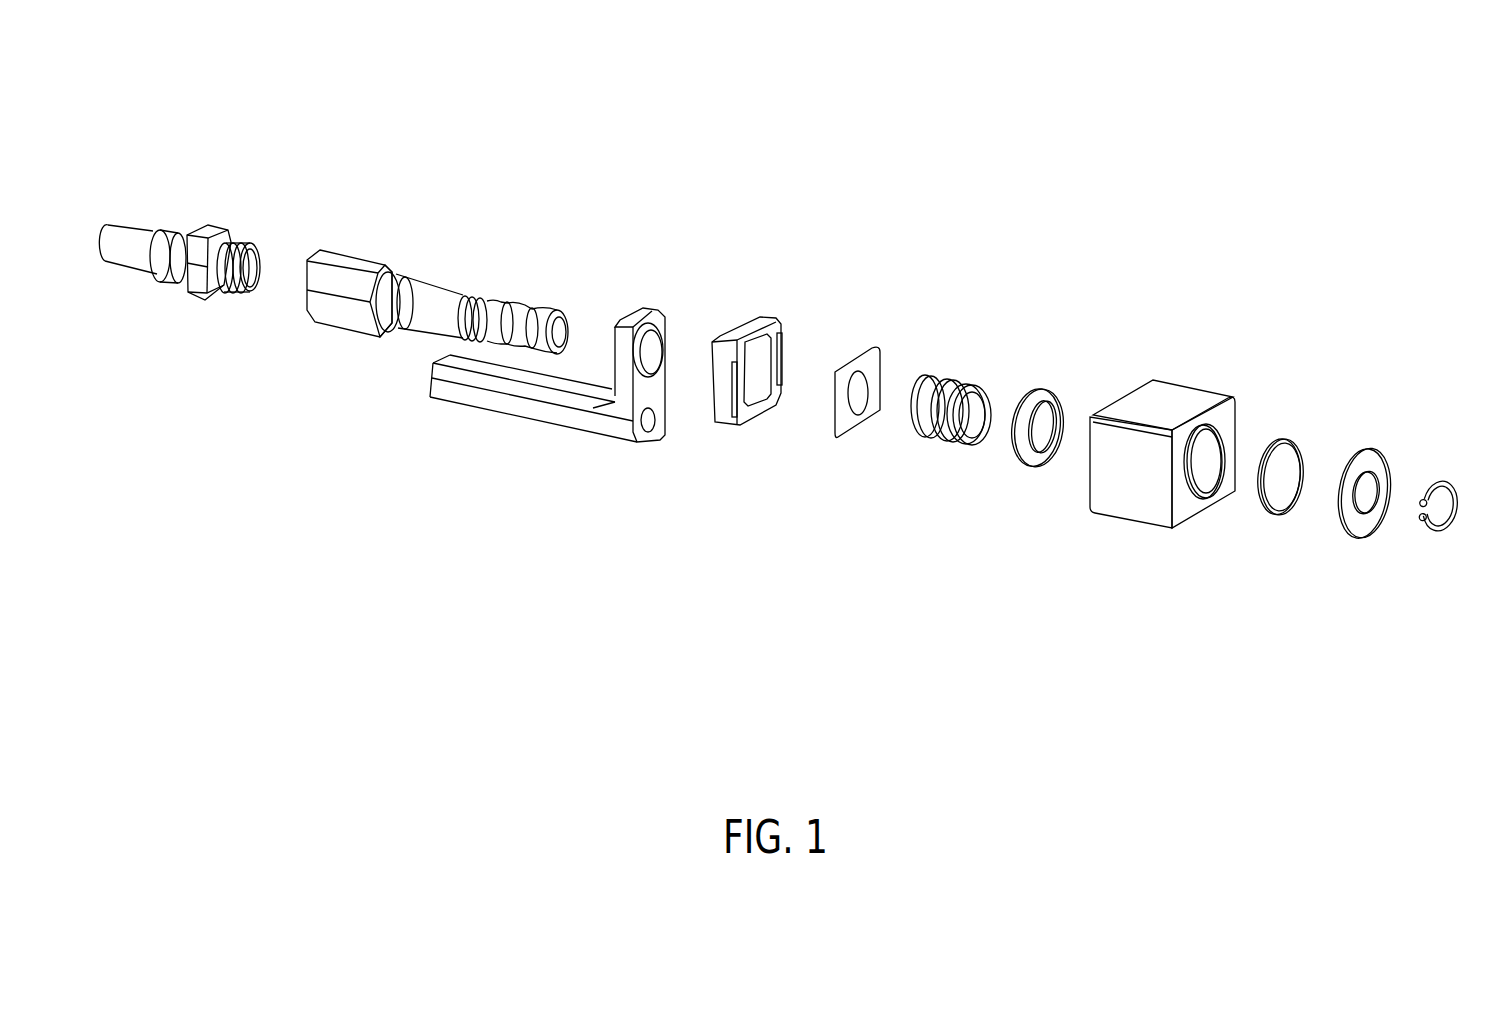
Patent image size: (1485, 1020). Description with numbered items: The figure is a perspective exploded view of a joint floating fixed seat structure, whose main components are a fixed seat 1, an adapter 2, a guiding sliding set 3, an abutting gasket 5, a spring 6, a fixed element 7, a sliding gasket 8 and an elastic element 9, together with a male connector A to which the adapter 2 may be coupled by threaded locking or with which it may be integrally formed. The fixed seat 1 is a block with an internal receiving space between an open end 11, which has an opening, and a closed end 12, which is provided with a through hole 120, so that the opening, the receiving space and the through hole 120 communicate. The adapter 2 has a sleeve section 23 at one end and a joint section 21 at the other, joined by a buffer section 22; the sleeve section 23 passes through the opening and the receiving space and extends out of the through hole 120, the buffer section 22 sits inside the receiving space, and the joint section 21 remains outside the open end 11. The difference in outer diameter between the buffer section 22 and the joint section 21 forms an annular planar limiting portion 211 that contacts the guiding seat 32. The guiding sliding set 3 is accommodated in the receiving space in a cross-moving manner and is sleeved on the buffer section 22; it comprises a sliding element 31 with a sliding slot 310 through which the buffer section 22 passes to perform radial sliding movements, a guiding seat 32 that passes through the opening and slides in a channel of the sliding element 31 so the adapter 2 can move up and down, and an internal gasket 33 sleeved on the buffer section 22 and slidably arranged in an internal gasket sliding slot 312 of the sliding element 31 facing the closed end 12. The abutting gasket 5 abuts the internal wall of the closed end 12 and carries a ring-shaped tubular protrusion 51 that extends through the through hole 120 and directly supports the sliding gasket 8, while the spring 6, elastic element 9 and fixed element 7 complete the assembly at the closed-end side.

The male connector A is at (179, 189).
The fixed seat 1 is at (1180, 423).
The open end 11 is at (1115, 543).
The closed end 12 is at (1202, 535).
The through hole 120 is at (1243, 529).
The adapter 2 is at (431, 310).
The joint section 21 is at (307, 297).
The buffer section 22 is at (474, 296).
The sleeve section 23 is at (559, 310).
The limiting portion 211 is at (419, 370).
The guiding sliding set 3 is at (635, 289).
The sliding element 31 is at (579, 455).
The guiding seat 32 is at (657, 288).
The sliding slot 310 is at (776, 347).
The internal gasket sliding slot 312 is at (786, 292).
The internal gasket 33 is at (830, 475).
The abutting gasket 5 is at (1009, 405).
The protrusion 51 is at (1001, 507).
The spring 6 is at (951, 323).
The fixed element 7 is at (1445, 404).
The sliding gasket 8 is at (1364, 575).
The elastic element 9 is at (1289, 379).